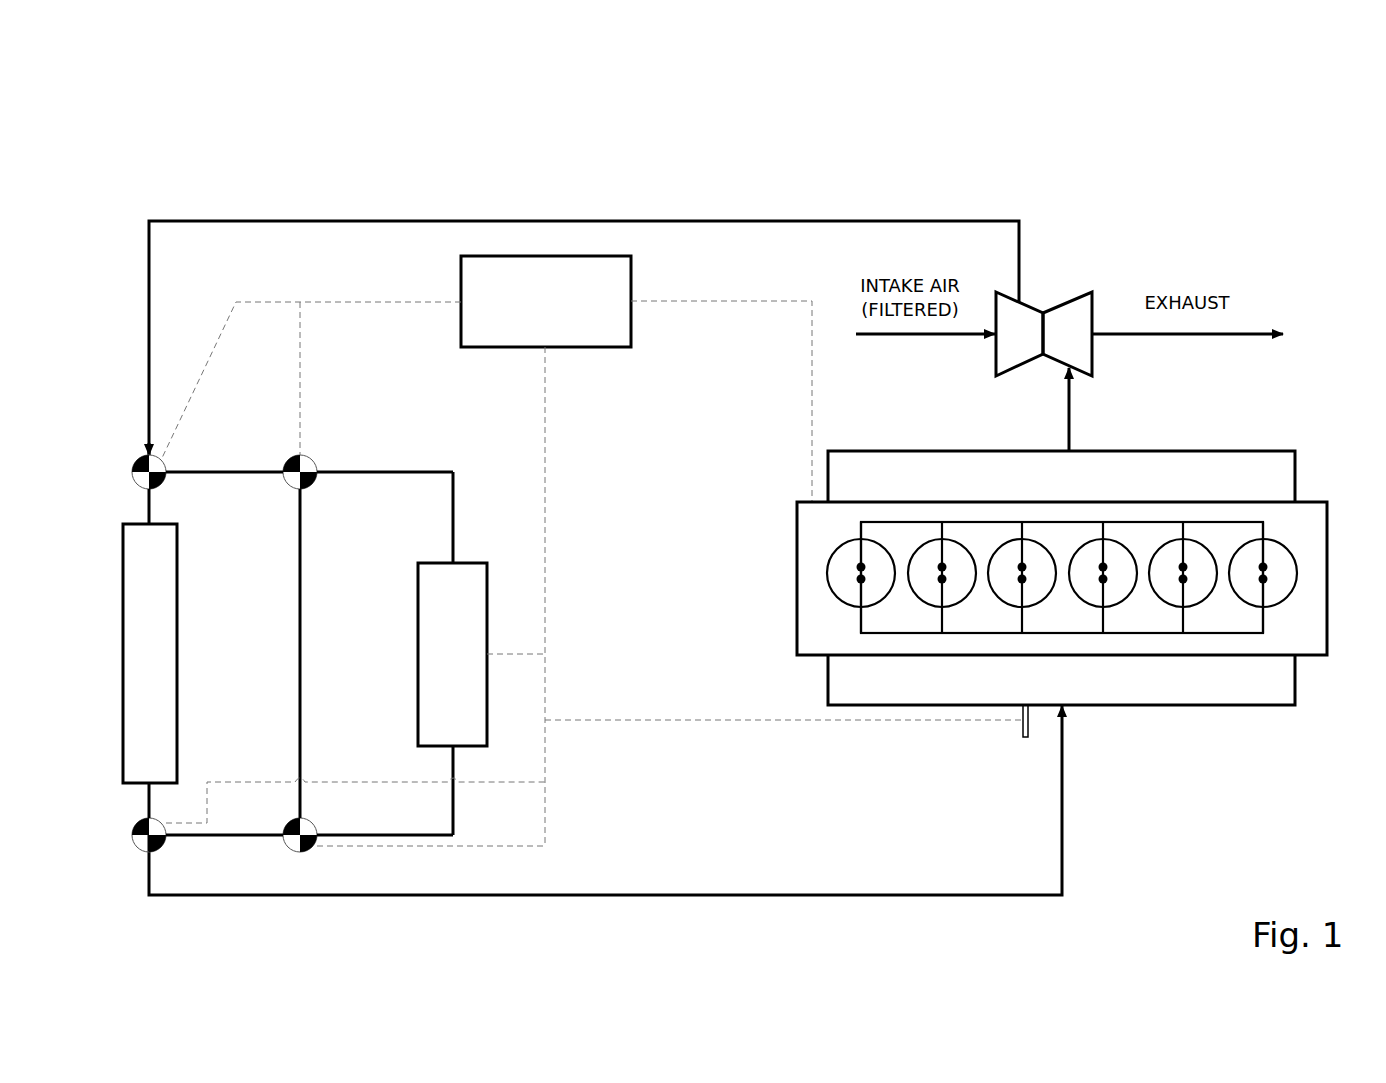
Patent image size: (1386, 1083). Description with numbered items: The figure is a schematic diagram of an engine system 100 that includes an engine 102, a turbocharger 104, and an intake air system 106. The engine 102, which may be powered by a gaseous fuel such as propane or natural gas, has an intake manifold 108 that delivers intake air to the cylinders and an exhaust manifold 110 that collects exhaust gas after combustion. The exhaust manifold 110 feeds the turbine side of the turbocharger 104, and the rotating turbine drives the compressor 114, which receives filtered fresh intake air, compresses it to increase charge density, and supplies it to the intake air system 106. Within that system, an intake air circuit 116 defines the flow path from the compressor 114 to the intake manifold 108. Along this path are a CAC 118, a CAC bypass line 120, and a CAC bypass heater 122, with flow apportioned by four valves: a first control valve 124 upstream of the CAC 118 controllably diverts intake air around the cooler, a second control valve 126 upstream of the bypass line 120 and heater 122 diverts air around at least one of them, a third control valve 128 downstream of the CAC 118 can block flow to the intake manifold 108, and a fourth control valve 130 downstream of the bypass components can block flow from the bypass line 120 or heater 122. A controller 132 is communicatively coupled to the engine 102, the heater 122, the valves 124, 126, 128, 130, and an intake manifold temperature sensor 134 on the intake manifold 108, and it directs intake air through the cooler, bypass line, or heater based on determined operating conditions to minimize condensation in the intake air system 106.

The engine system 100 is at (1202, 182).
The engine 102 is at (1328, 578).
The turbocharger 104 is at (1047, 301).
The intake air system 106 is at (370, 182).
The intake manifold 108 is at (1061, 680).
The exhaust manifold 110 is at (1061, 435).
The compressor 114 is at (1095, 362).
The intake air circuit 116 is at (995, 360).
The CAC 118 is at (150, 653).
The CAC bypass line 120 is at (309, 653).
The CAC bypass heater 122 is at (452, 653).
The first control valve 124 is at (164, 486).
The second control valve 126 is at (314, 460).
The third control valve 128 is at (164, 849).
The fourth control valve 130 is at (314, 823).
The controller 132 is at (592, 551).
The intake manifold temperature sensor 134 is at (1021, 740).